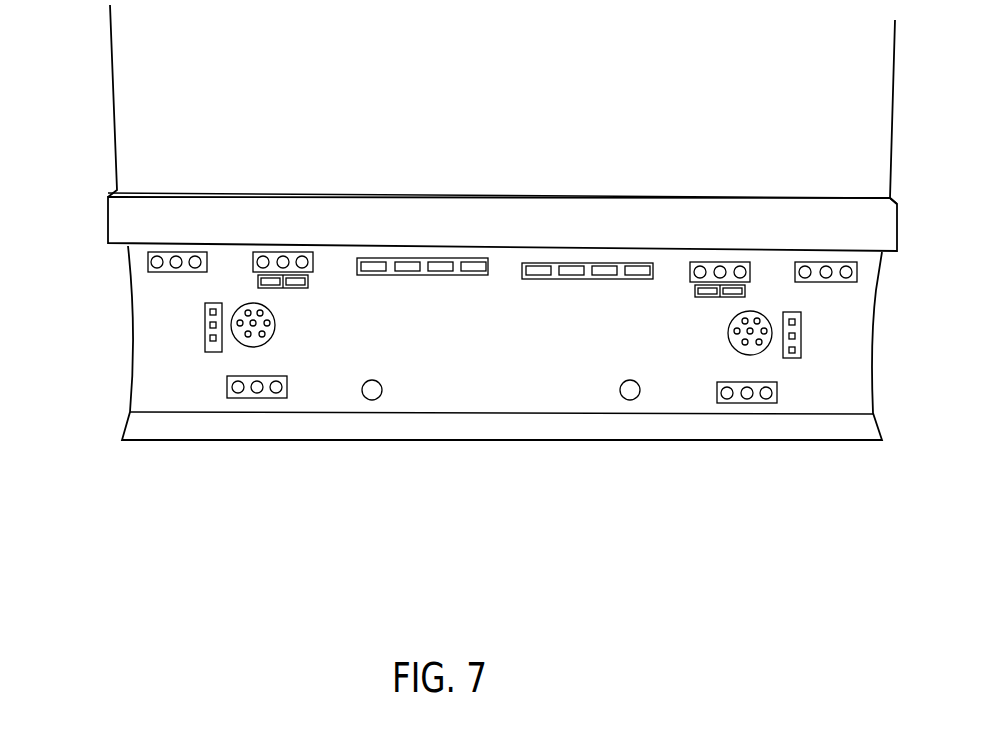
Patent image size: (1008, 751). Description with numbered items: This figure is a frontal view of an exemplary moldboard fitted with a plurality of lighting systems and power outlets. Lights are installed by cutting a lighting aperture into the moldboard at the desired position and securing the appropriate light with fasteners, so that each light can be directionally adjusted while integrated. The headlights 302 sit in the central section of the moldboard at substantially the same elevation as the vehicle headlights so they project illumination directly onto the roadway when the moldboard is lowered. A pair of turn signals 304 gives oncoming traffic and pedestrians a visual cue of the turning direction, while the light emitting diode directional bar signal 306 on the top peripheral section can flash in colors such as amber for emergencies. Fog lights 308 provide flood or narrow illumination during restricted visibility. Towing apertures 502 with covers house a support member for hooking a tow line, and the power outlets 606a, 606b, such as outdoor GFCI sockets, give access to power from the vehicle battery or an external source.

The headlight 302 is at (728, 328).
The turn signal 304 is at (205, 328).
The light emitting diode directional bar signal 306 is at (430, 257).
The fog light 308 is at (253, 256).
The towing aperture 502 is at (622, 384).
The power outlet 606a is at (313, 287).
The power outlet 606b is at (695, 293).